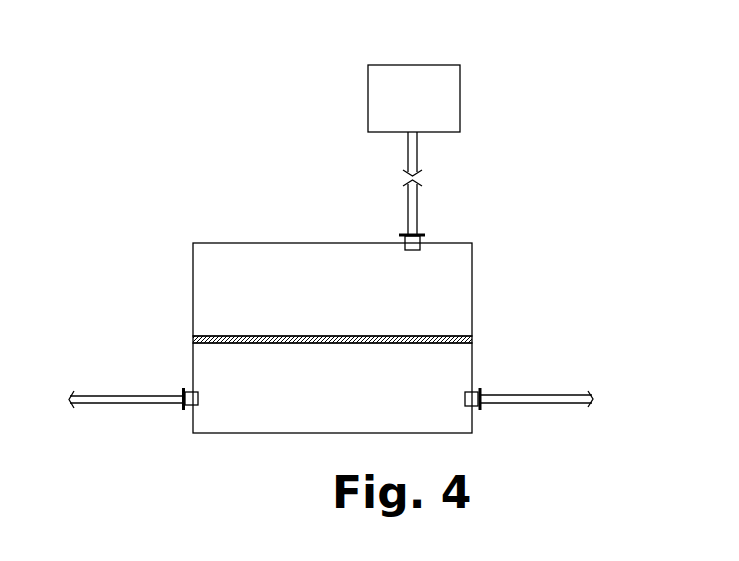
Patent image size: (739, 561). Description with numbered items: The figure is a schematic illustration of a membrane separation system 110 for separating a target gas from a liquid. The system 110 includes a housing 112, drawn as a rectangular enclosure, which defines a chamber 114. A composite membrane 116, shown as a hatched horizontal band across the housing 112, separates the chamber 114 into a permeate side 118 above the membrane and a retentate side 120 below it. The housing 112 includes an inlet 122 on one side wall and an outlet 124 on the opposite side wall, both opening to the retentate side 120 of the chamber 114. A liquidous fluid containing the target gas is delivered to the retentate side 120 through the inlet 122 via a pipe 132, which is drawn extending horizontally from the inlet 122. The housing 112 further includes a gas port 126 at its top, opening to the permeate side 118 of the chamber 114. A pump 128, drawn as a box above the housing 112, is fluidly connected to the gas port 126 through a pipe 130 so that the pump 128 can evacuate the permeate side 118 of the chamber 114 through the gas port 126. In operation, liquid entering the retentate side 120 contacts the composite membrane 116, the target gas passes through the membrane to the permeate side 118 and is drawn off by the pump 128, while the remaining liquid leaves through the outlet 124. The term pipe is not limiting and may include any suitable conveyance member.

The system 110 is at (163, 111).
The housing 112 is at (181, 268).
The chamber 114 is at (211, 317).
The composite membrane 116 is at (378, 344).
The permeate side 118 is at (440, 283).
The retentate side 120 is at (220, 417).
The inlet 122 is at (183, 408).
The outlet 124 is at (481, 409).
The gas port 126 is at (420, 233).
The pump 128 is at (474, 82).
The pipe 130 is at (418, 157).
The pipe 132 is at (108, 395).